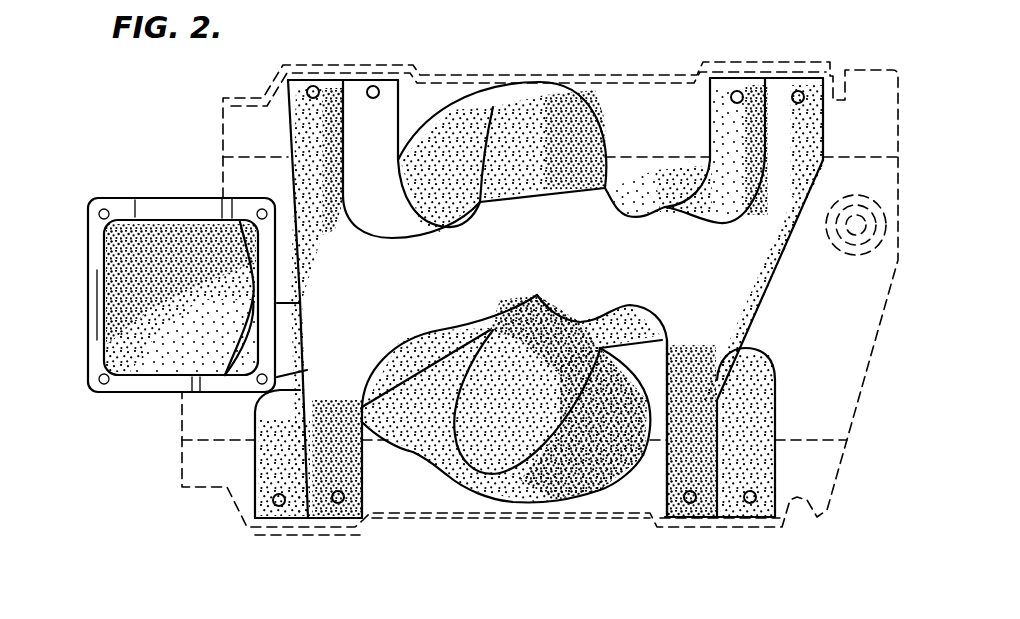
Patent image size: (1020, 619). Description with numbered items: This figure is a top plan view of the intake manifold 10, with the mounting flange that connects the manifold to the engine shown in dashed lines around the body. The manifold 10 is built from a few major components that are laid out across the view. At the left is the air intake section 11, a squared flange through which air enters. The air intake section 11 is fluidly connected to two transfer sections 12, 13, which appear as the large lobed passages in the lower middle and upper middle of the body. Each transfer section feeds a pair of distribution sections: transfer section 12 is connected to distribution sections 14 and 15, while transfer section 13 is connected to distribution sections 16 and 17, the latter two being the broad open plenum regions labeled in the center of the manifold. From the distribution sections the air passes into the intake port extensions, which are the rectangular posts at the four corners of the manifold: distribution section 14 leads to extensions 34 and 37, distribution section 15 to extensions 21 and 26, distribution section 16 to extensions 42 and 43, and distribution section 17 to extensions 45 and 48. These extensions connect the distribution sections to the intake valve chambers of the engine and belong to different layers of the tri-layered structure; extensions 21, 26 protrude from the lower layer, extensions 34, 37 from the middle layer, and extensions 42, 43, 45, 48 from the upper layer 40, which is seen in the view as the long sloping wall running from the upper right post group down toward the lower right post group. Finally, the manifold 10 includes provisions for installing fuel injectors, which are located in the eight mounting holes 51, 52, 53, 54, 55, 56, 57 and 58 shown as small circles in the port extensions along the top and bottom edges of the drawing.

The manifold 10 is at (92, 483).
The air intake section 11 is at (148, 355).
The transfer section 12 is at (433, 420).
The transfer section 13 is at (537, 113).
The distribution section 14 is at (505, 415).
The distribution section 15 is at (578, 410).
The distribution section 16 is at (410, 305).
The distribution section 17 is at (594, 261).
The intake port extension 21 is at (278, 480).
The intake port extension 26 is at (728, 120).
The intake port extension 34 is at (385, 118).
The intake port extension 37 is at (768, 452).
The upper layer 40 is at (730, 308).
The intake port extension 42 is at (302, 127).
The intake port extension 43 is at (368, 478).
The intake port extension 45 is at (677, 502).
The intake port extension 48 is at (810, 120).
The mounting hole 51 is at (280, 506).
The mounting hole 52 is at (312, 86).
The mounting hole 53 is at (340, 504).
The mounting hole 54 is at (372, 86).
The mounting hole 55 is at (690, 504).
The mounting hole 56 is at (737, 91).
The mounting hole 57 is at (750, 504).
The mounting hole 58 is at (798, 91).